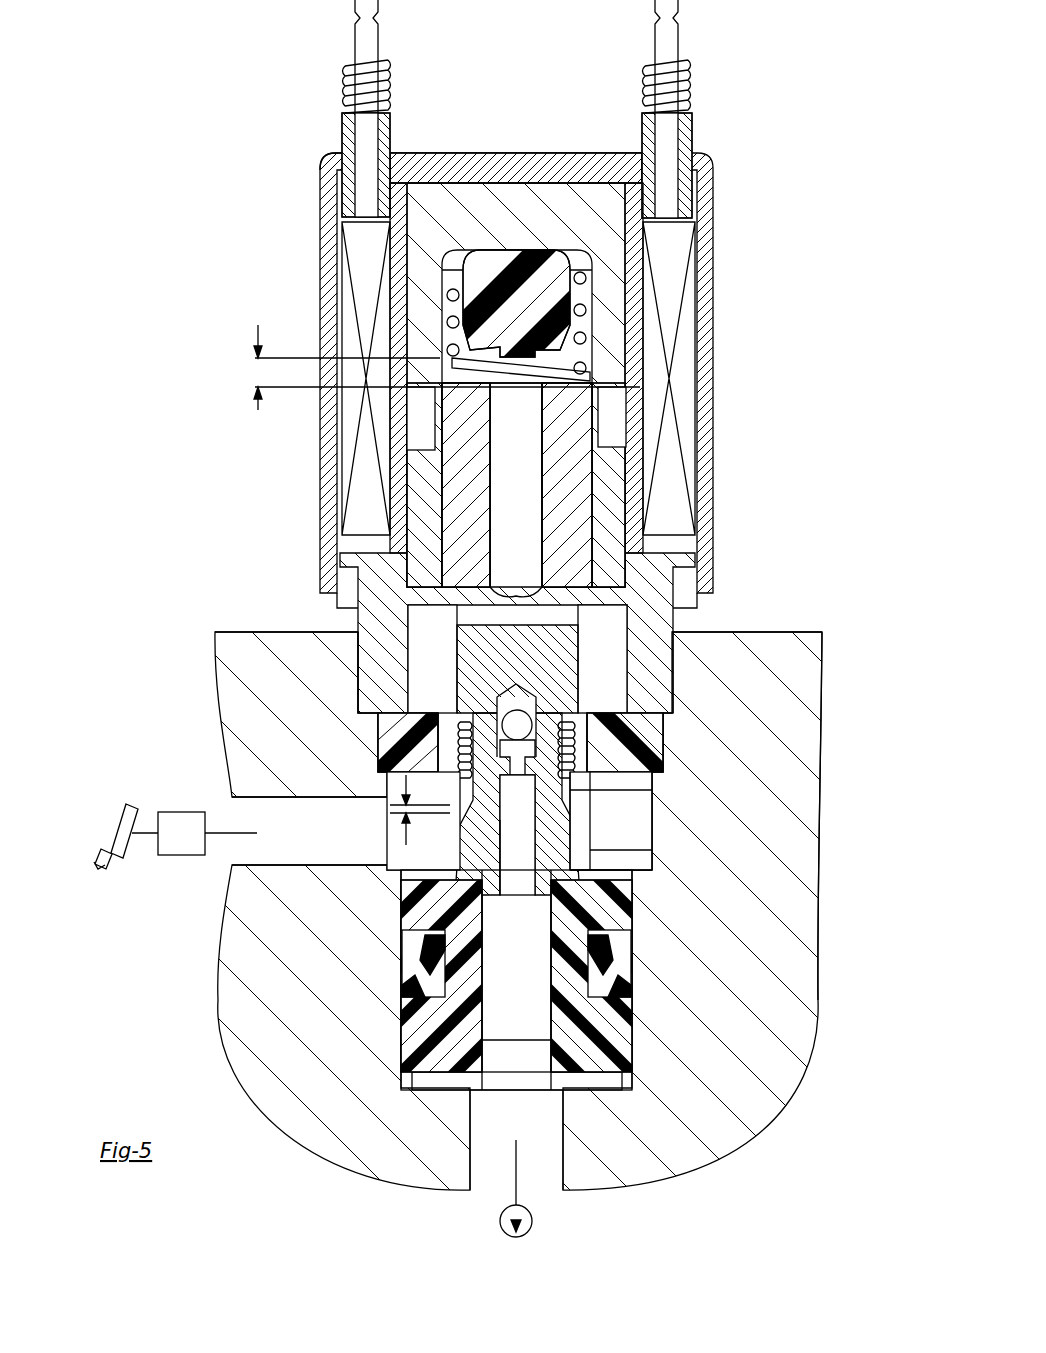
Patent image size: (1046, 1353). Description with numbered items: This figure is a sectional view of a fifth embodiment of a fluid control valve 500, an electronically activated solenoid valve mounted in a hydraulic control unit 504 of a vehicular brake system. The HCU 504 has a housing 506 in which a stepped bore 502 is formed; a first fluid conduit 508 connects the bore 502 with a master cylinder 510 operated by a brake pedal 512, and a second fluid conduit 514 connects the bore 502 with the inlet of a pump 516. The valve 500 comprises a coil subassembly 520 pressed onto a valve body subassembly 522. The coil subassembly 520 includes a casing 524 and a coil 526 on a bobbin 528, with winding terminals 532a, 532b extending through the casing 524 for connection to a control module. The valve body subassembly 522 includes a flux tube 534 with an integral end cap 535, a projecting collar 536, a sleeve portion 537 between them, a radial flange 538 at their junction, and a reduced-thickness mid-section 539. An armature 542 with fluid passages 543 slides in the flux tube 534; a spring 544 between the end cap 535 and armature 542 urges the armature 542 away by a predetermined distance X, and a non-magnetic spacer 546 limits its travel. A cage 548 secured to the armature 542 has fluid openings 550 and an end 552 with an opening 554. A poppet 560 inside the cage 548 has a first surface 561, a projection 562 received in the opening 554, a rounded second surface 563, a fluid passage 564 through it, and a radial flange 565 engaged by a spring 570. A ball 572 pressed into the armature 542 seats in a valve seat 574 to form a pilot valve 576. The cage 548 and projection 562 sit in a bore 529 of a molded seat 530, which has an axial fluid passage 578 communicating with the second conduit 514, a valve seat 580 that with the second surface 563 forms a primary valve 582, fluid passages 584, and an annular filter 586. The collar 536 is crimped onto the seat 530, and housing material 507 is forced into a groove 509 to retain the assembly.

The fluid control valve 500 is at (752, 296).
The stepped bore 502 is at (640, 856).
The hydraulic control unit 504 is at (805, 726).
The housing 506 is at (785, 840).
The material 507 is at (662, 716).
The first fluid conduit 508 is at (245, 860).
The groove 509 is at (672, 652).
The master cylinder 510 is at (165, 812).
The brake pedal 512 is at (118, 851).
The second fluid conduit 514 is at (552, 1188).
The pump 516 is at (505, 1232).
The coil subassembly 520 is at (714, 186).
The valve body subassembly 522 is at (655, 917).
The casing 524 is at (330, 175).
The coil 526 is at (370, 245).
The bobbin 528 is at (365, 548).
The bore 529 is at (440, 718).
The seat 530 is at (635, 1040).
The winding terminal 532a is at (372, 40).
The winding terminal 532b is at (652, 40).
The flux tube 534 is at (673, 608).
The end cap 535 is at (447, 205).
The projecting collar 536 is at (665, 636).
The sleeve portion 537 is at (418, 240).
The radial flange 538 is at (360, 600).
The mid-section 539 is at (432, 430).
The armature 542 is at (585, 465).
The fluid passages 543 is at (500, 584).
The spring 544 is at (592, 374).
The spacer 546 is at (545, 272).
The cage 548 is at (437, 674).
The fluid openings 550 is at (586, 737).
The end 552 is at (600, 824).
The opening 554 is at (610, 866).
The poppet 560 is at (470, 848).
The first surface 561 is at (521, 708).
The projection 562 is at (450, 882).
The second surface 563 is at (430, 932).
The fluid passage 564 is at (525, 836).
The radial flange 565 is at (580, 777).
The spring 570 is at (560, 738).
The ball 572 is at (500, 738).
The valve seat 574 is at (518, 750).
The pilot valve 576 is at (505, 733).
The axial fluid passage 578 is at (542, 1038).
The valve seat 580 is at (525, 906).
The primary valve 582 is at (518, 903).
The fluid passages 584 is at (620, 886).
The annular filter 586 is at (410, 794).
The predetermined distance X is at (444, 367).